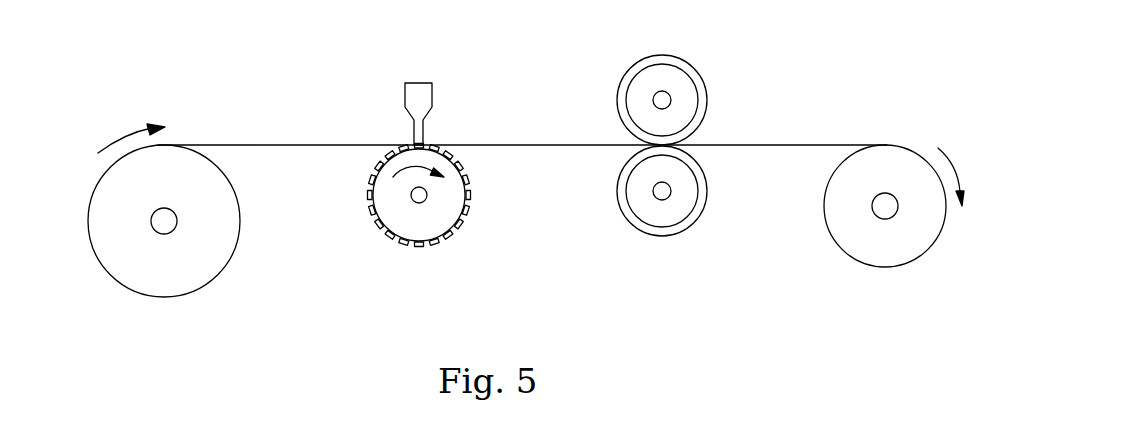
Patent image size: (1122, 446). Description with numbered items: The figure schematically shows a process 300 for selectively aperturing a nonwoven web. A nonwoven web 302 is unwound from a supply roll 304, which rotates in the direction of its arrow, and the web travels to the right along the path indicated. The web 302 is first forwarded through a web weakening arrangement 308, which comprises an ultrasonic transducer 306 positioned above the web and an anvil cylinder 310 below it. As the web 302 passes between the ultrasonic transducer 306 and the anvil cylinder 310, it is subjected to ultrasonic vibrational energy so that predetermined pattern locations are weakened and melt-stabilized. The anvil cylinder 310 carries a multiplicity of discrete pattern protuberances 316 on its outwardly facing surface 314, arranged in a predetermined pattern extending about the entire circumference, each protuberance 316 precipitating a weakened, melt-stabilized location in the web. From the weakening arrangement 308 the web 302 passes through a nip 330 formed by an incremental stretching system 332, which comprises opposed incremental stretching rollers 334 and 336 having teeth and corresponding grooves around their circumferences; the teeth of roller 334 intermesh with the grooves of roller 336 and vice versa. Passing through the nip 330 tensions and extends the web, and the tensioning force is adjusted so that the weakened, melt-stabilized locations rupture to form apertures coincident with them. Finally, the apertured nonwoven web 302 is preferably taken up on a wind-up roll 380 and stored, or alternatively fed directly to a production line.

The process for selectively aperturing a nonwoven web 300 is at (196, 98).
The nonwoven web 302 is at (320, 143).
The supply roll 304 is at (197, 280).
The ultrasonic transducer 306 is at (417, 88).
The web weakening arrangement 308 is at (449, 270).
The anvil cylinder 310 is at (417, 230).
The outwardly facing surface 314 is at (378, 213).
The pattern protuberances 316 is at (467, 212).
The nip 330 is at (622, 155).
The incremental stretching system 332 is at (625, 60).
The incremental stretching roller 334 is at (680, 80).
The incremental stretching roller 336 is at (680, 212).
The wind-up roll 380 is at (900, 153).